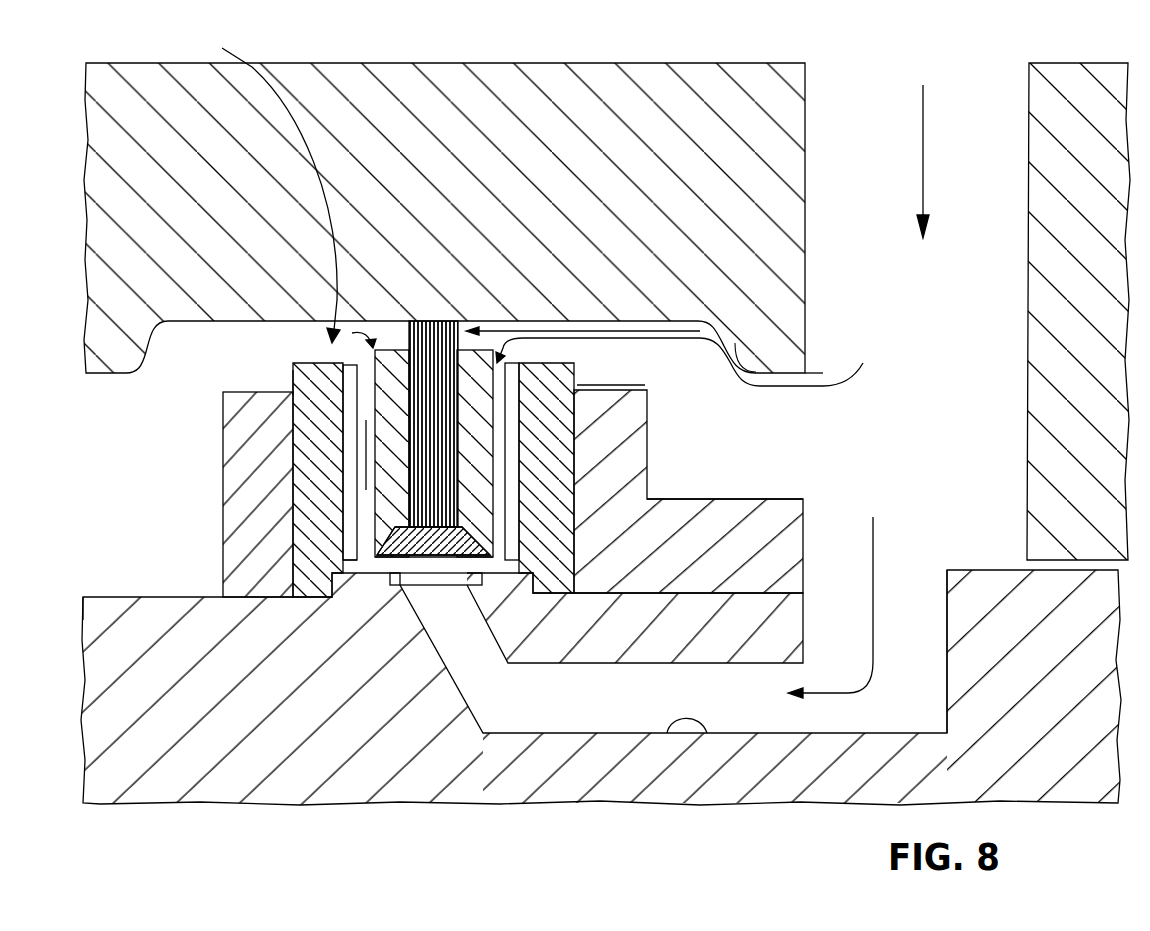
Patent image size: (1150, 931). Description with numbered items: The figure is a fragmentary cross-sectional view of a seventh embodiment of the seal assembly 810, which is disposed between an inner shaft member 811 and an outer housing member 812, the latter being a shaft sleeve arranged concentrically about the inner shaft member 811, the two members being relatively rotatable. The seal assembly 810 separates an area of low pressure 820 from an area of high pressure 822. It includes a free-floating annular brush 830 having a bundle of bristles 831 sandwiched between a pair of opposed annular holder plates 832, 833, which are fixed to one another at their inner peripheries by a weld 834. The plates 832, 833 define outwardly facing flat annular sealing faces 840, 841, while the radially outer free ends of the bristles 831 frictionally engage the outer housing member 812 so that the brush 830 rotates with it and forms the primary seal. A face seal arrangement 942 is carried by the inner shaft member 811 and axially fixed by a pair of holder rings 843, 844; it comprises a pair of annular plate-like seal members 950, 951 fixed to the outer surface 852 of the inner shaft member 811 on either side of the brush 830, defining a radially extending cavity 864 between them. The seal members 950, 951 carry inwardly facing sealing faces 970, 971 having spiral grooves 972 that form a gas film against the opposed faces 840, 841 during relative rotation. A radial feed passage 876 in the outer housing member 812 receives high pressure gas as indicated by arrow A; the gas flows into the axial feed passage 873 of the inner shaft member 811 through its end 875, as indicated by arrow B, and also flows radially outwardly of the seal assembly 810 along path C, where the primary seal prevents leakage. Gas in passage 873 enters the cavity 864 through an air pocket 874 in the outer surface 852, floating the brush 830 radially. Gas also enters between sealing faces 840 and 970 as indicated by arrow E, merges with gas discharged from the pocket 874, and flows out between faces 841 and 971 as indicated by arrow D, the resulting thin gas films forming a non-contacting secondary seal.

The outer housing member 812 is at (140, 68).
The inner shaft member 811 is at (165, 790).
The feed passage 876 is at (1029, 108).
The annular brush 830 is at (374, 350).
The bristles 831 is at (409, 325).
The holder plate 832 is at (482, 462).
The holder plate 833 is at (293, 440).
The weld 834 is at (457, 552).
The sealing face 840 is at (505, 497).
The sealing face 841 is at (362, 562).
The holder ring 843 is at (748, 508).
The holder ring 844 is at (237, 473).
The outer surface 852 is at (105, 592).
The cavity 864 is at (373, 565).
The feed passage 873 is at (692, 740).
The air pocket 874 is at (412, 588).
The end of feed passage 875 is at (947, 595).
The face seal arrangement 942 is at (259, 179).
The seal member 950 is at (645, 385).
The seal member 951 is at (290, 380).
The sealing face 970 is at (503, 390).
The sealing face 971 is at (330, 335).
The grooves 972 is at (362, 358).
The seal assembly 810 is at (208, 428).
The area of low pressure 820 is at (160, 563).
The area of high pressure 822 is at (998, 518).
The arrow A is at (925, 160).
The arrow B is at (875, 642).
The arrow C is at (823, 387).
The arrow D is at (367, 463).
The arrow E is at (617, 338).